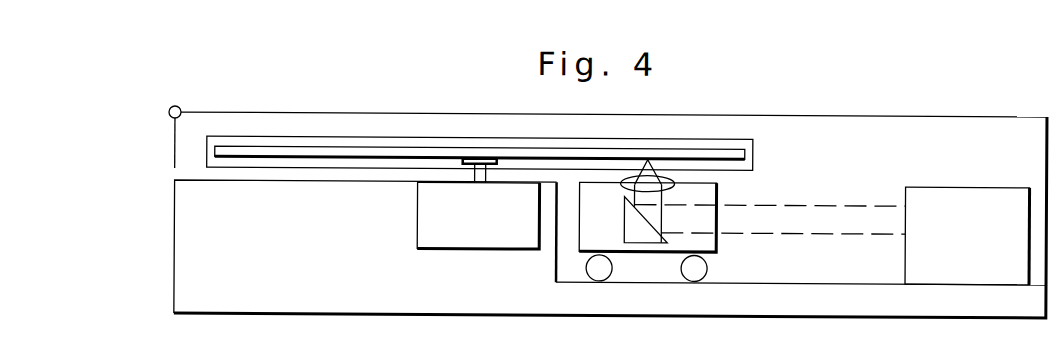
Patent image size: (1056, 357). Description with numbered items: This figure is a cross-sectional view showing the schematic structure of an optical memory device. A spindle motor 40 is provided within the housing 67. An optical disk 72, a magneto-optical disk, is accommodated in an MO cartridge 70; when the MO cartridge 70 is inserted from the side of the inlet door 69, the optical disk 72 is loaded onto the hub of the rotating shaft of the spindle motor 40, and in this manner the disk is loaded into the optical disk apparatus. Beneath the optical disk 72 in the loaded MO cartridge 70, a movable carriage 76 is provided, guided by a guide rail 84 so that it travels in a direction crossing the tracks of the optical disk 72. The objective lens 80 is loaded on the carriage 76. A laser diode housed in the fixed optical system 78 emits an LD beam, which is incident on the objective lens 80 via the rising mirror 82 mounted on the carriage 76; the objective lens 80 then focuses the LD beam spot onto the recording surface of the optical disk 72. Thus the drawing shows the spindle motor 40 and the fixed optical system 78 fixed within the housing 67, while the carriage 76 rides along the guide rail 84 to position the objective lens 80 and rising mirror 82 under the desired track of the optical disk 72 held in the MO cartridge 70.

The spindle motor 40 is at (462, 248).
The housing 67 is at (973, 112).
The inlet door 69 is at (174, 148).
The MO cartridge 70 is at (317, 136).
The optical disk 72 is at (727, 146).
The carriage 76 is at (662, 249).
The fixed optical system 78 is at (960, 183).
The objective lens 80 is at (674, 178).
The rising mirror 82 is at (626, 224).
The guide rail 84 is at (797, 272).